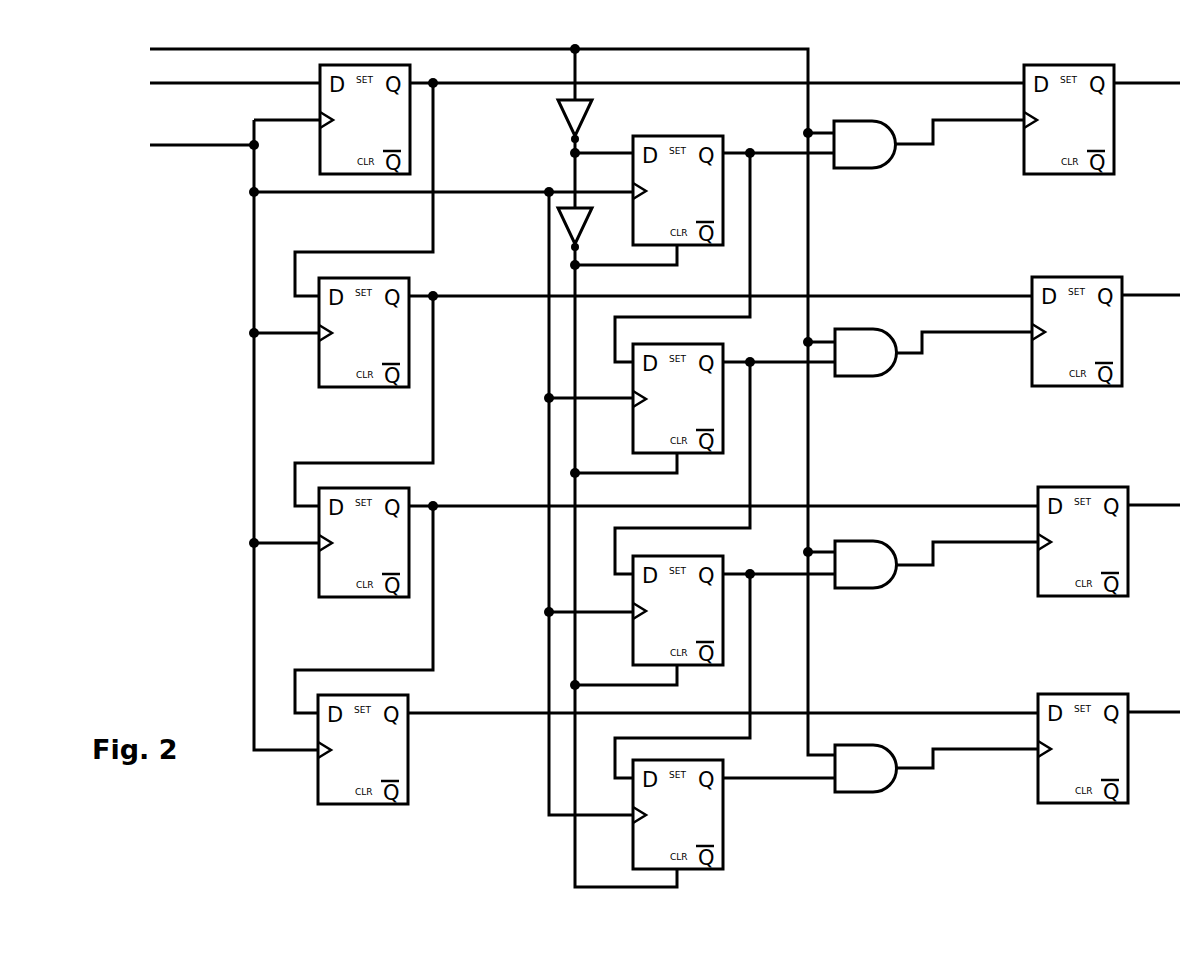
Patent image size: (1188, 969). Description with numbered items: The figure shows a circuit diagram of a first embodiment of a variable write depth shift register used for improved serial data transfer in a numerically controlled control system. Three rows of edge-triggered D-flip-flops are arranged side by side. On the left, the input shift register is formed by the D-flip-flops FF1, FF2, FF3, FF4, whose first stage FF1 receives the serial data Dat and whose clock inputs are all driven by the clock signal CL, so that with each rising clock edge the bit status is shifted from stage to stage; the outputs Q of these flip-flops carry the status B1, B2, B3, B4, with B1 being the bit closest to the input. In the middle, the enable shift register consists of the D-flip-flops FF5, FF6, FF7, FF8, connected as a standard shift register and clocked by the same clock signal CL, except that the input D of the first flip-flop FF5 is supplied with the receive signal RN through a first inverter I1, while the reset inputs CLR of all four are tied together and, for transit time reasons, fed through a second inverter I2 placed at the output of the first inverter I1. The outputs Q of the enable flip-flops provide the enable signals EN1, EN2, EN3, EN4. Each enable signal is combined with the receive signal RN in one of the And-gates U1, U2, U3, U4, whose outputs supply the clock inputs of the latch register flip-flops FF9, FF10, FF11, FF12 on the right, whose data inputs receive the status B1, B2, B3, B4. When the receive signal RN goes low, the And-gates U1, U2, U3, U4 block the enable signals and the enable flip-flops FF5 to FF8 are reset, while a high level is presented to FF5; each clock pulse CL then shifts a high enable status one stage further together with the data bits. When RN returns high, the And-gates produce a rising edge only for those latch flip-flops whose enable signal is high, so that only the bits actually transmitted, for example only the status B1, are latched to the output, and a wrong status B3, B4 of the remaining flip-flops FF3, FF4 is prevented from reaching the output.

The receive signal RN is at (458, 398).
The serial data input Dat is at (199, 99).
The clock signal CL is at (357, 467).
The first D-flip-flop of the input shift register FF1 is at (343, 120).
The second D-flip-flop of the input shift register FF2 is at (343, 333).
The third D-flip-flop of the input shift register FF3 is at (343, 543).
The fourth D-flip-flop of the input shift register FF4 is at (342, 750).
The first D-flip-flop of the enable shift register FF5 is at (678, 178).
The second D-flip-flop of the enable shift register FF6 is at (657, 399).
The third D-flip-flop of the enable shift register FF7 is at (657, 611).
The fourth D-flip-flop of the enable shift register FF8 is at (657, 816).
The first D-flip-flop of the latch register FF9 is at (1081, 120).
The second D-flip-flop of the latch register FF10 is at (1080, 334).
The third D-flip-flop of the latch register FF11 is at (1086, 544).
The fourth D-flip-flop of the latch register FF12 is at (1086, 750).
The first inverter I1 is at (595, 103).
The second inverter I2 is at (617, 520).
The first And-gate U1 is at (928, 132).
The second And-gate U2 is at (932, 341).
The third And-gate U3 is at (935, 552).
The fourth And-gate U4 is at (935, 755).
The status of the first input shift register flip-flop B1 is at (659, 187).
The status of the second input shift register flip-flop B2 is at (663, 398).
The status of the third input shift register flip-flop B3 is at (666, 607).
The status of the fourth input shift register flip-flop B4 is at (723, 734).
The first enable signal EN1 is at (725, 246).
The second enable signal EN2 is at (725, 456).
The third enable signal EN3 is at (725, 664).
The fourth enable signal EN4 is at (779, 766).